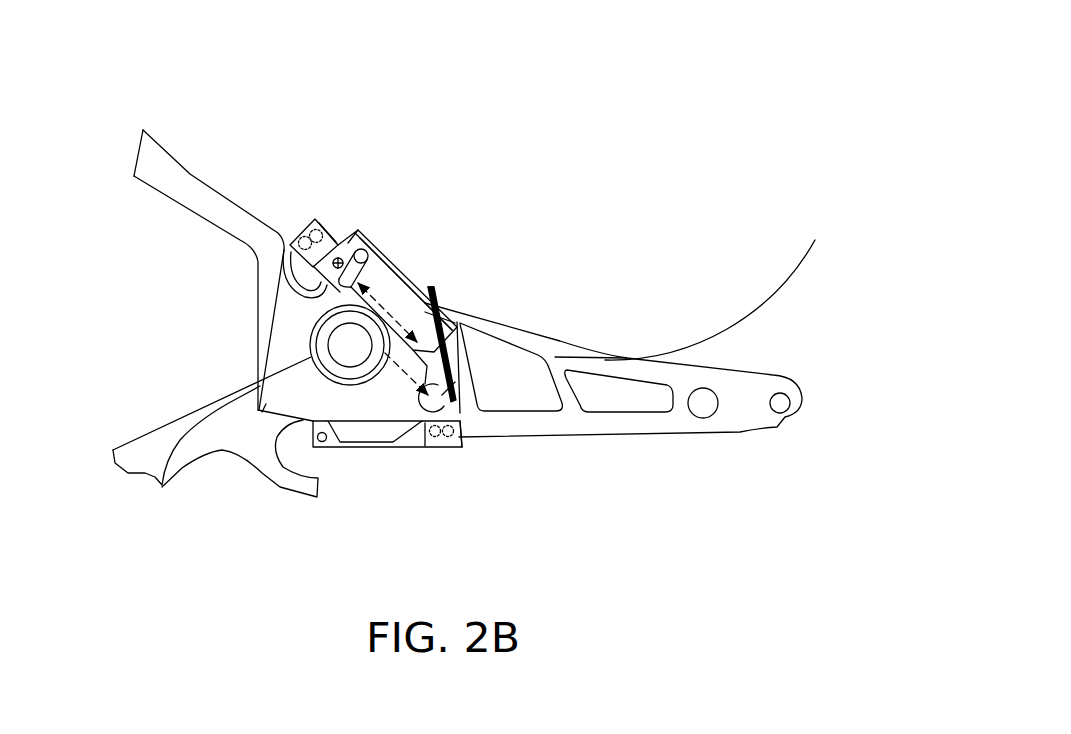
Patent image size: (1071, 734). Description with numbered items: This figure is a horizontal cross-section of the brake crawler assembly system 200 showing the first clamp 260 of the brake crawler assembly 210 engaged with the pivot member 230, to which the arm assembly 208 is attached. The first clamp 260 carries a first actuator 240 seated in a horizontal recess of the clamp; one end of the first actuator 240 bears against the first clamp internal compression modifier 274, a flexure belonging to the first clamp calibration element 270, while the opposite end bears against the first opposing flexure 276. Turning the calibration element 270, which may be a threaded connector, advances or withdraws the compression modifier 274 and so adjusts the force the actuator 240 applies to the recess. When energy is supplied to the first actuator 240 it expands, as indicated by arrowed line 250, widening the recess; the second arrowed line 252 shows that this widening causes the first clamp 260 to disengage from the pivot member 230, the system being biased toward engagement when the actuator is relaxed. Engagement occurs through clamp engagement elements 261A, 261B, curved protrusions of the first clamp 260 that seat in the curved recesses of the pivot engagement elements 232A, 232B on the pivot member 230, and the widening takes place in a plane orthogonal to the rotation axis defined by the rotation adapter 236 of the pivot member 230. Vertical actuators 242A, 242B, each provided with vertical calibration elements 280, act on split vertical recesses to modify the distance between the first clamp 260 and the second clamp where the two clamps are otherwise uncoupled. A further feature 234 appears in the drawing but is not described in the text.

The brake crawler assembly system 200 is at (218, 140).
The arm assembly 208 is at (763, 297).
The brake crawler assembly 210 is at (430, 300).
The pivot member 230 is at (258, 410).
The pivot engagement element 232A is at (335, 296).
The pivot engagement element 232B is at (423, 407).
The boss 234 is at (290, 330).
The rotation adapter 236 is at (162, 485).
The first actuator 240 is at (430, 290).
The vertical actuator 242A is at (343, 250).
The vertical actuator 242B is at (465, 425).
The arrowed line 250 is at (408, 277).
The second arrowed line 252 is at (391, 260).
The first clamp 260 is at (432, 292).
The clamp engagement element 261A is at (314, 287).
The clamp engagement element 261B is at (442, 408).
The first clamp calibration element 270 is at (345, 238).
The first clamp internal compression modifier 274 is at (362, 232).
The first opposing flexure 276 is at (431, 342).
The vertical calibration element 280 is at (290, 245).